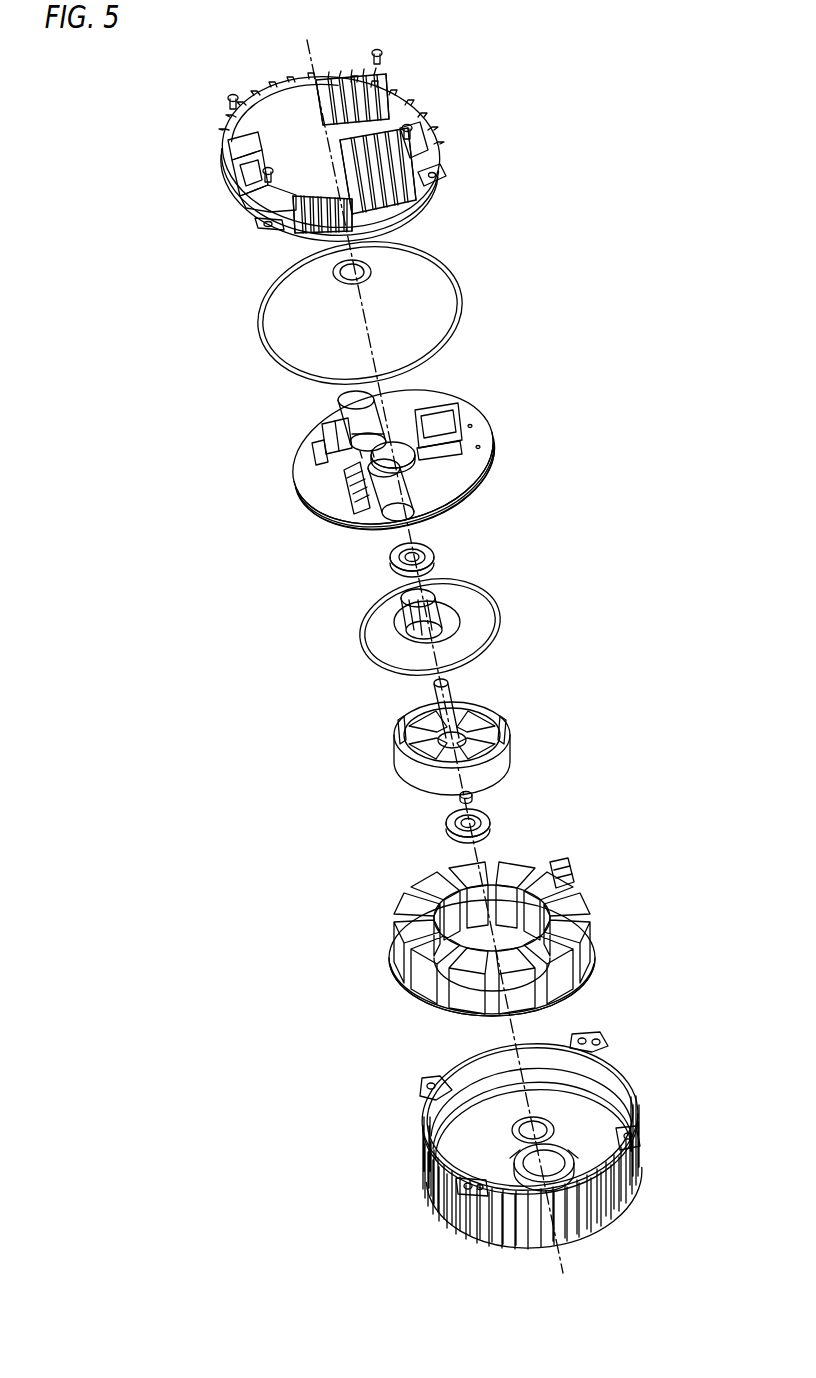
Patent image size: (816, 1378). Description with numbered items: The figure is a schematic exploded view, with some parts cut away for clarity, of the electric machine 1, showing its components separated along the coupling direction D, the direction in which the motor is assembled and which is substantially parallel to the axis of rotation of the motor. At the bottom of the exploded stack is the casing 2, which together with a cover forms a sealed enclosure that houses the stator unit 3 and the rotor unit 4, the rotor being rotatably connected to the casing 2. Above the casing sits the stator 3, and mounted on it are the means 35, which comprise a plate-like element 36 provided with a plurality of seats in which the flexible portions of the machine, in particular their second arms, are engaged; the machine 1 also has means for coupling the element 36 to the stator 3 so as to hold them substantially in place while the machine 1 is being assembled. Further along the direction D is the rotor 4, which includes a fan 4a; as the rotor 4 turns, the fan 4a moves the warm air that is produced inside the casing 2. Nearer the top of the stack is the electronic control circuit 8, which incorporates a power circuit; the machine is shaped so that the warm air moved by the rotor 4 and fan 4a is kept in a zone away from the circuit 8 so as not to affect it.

The electric machine 1 is at (582, 151).
The coupling direction D is at (308, 60).
The electronic control circuit 8 is at (489, 414).
The rotor unit 4 is at (516, 721).
The fan 4a is at (452, 600).
The stator unit 3 is at (594, 885).
The means 35 is at (587, 895).
The plate-like element 36 is at (558, 866).
The casing 2 is at (645, 1152).